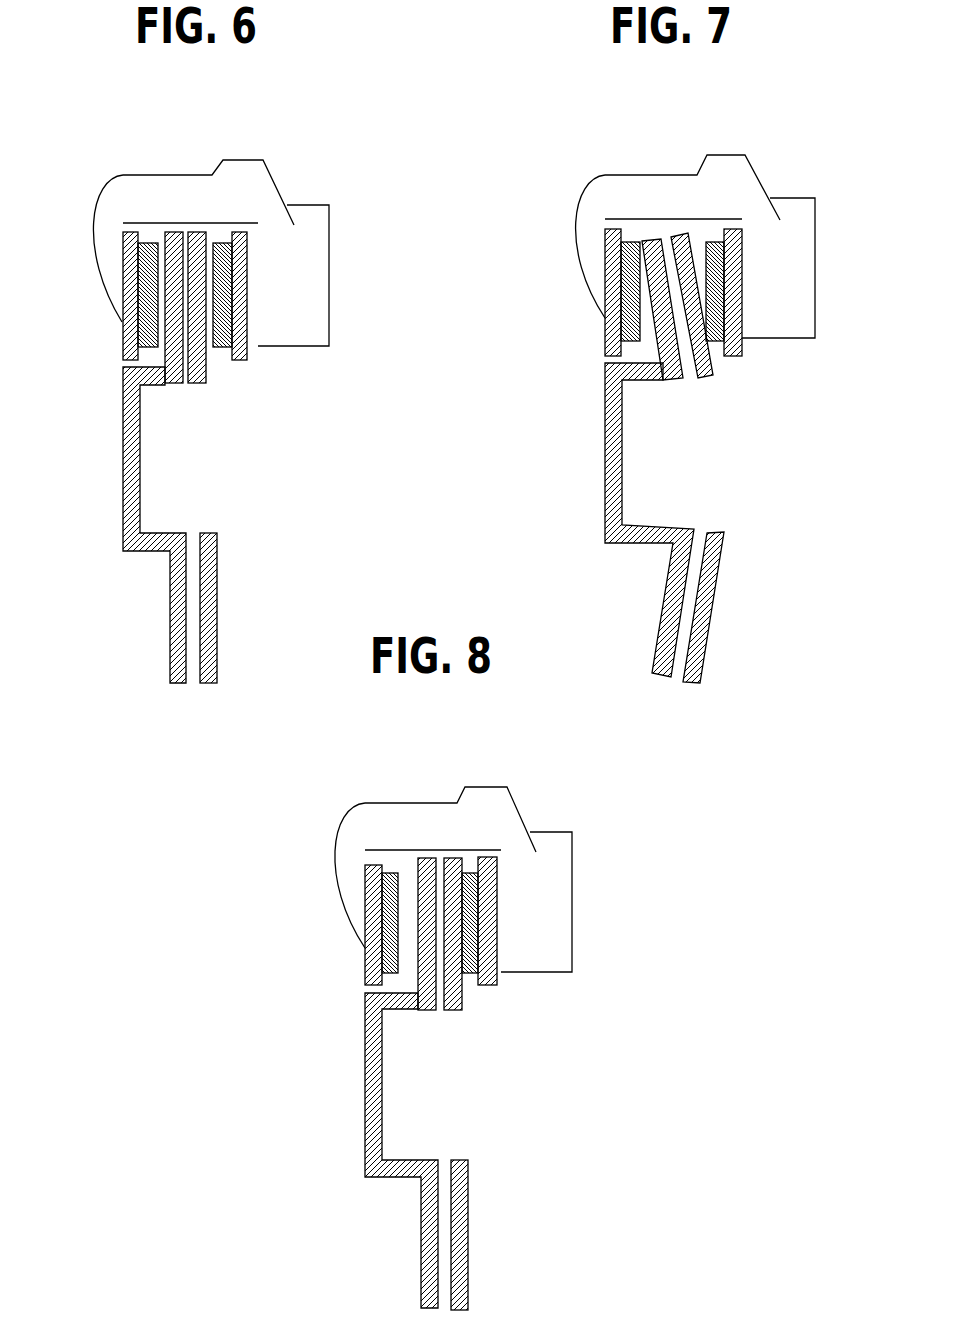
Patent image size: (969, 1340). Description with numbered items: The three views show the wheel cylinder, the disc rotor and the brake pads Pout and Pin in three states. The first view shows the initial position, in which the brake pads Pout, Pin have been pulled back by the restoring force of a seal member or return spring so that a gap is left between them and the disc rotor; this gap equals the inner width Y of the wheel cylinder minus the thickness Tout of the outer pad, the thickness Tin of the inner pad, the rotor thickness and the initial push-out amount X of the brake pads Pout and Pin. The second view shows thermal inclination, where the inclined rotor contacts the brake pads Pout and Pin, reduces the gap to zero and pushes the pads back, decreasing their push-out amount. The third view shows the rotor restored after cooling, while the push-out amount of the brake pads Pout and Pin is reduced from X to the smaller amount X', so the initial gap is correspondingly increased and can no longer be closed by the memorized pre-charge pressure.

In FIG. 6, the outer brake pad Pout is at (128, 240).
In FIG. 7, the outer brake pad Pout is at (610, 237).
In FIG. 8, the outer brake pad Pout is at (370, 867).
In FIG. 6, the inner brake pad Pin is at (234, 240).
In FIG. 7, the inner brake pad Pin is at (735, 237).
In FIG. 8, the inner brake pad Pin is at (483, 867).
In FIG. 6, the inner width of the wheel cylinder Y is at (258, 452).
In FIG. 7, the inner width of the wheel cylinder Y is at (742, 338).
In FIG. 8, the inner width of the wheel cylinder Y is at (501, 1082).
In FIG. 6, the thickness of the outer brake pad Tout is at (158, 243).
In FIG. 8, the thickness of the outer brake pad Tout is at (398, 873).
In FIG. 6, the thickness of the inner brake pad Tin is at (247, 223).
In FIG. 8, the thickness of the inner brake pad Tin is at (497, 850).
In FIG. 6, the initial push-out amount of the brake pads X is at (253, 420).
In FIG. 8, the reduced initial push-out amount of the brake pads X' is at (498, 1049).